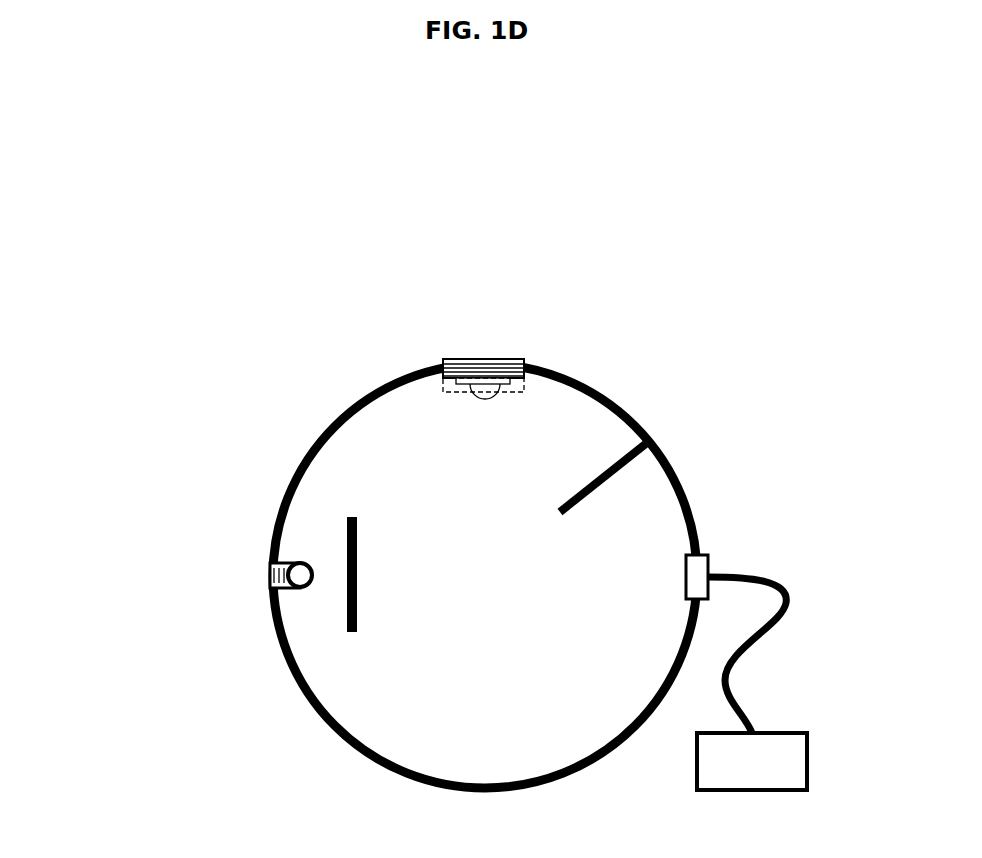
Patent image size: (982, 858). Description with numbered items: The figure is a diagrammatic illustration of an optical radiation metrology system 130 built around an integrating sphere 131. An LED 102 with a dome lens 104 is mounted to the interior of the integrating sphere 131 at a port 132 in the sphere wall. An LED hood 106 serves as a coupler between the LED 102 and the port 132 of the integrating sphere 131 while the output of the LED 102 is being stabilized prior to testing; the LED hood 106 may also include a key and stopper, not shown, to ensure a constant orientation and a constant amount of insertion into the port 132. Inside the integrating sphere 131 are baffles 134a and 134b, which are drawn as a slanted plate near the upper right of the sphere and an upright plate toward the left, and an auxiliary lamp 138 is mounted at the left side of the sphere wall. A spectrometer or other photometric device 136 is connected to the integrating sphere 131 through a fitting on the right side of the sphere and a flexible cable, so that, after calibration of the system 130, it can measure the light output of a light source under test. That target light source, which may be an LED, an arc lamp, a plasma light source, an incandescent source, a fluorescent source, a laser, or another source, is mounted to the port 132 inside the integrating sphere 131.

The optical radiation metrology system 130 is at (105, 371).
The integrating sphere 131 is at (683, 478).
The port 132 is at (495, 362).
The LED 102 is at (525, 380).
The dome lens 104 is at (478, 390).
The LED hood 106 is at (505, 392).
The baffle 134a is at (572, 511).
The baffle 134b is at (358, 597).
The photometric device 136 is at (793, 757).
The auxiliary lamp 138 is at (265, 577).